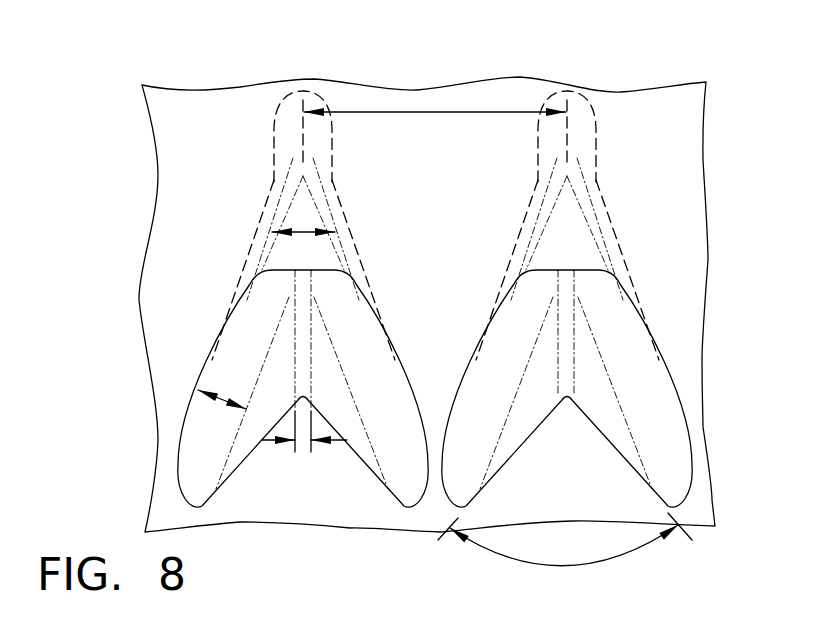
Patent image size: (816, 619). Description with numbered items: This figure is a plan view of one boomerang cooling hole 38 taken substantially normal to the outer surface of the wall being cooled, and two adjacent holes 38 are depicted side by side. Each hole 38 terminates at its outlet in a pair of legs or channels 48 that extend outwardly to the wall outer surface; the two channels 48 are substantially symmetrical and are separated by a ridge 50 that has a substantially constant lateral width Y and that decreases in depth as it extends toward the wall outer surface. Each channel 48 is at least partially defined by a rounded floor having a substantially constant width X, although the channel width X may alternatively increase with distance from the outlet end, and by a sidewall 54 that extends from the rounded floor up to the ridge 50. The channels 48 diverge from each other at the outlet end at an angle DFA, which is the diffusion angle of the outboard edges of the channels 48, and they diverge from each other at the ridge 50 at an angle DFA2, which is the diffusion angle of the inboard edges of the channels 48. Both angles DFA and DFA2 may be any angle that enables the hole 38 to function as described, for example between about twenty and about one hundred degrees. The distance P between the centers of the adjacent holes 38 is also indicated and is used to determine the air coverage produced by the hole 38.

The hole 38 is at (190, 79).
The channels 48 is at (358, 347).
The ridge 50 is at (305, 340).
The sidewall 54 is at (255, 450).
The distance P is at (433, 115).
The diffusion angle DFA is at (304, 240).
The channel width X is at (225, 400).
The lateral width Y is at (267, 443).
The diffusion angle DFA2 is at (573, 568).